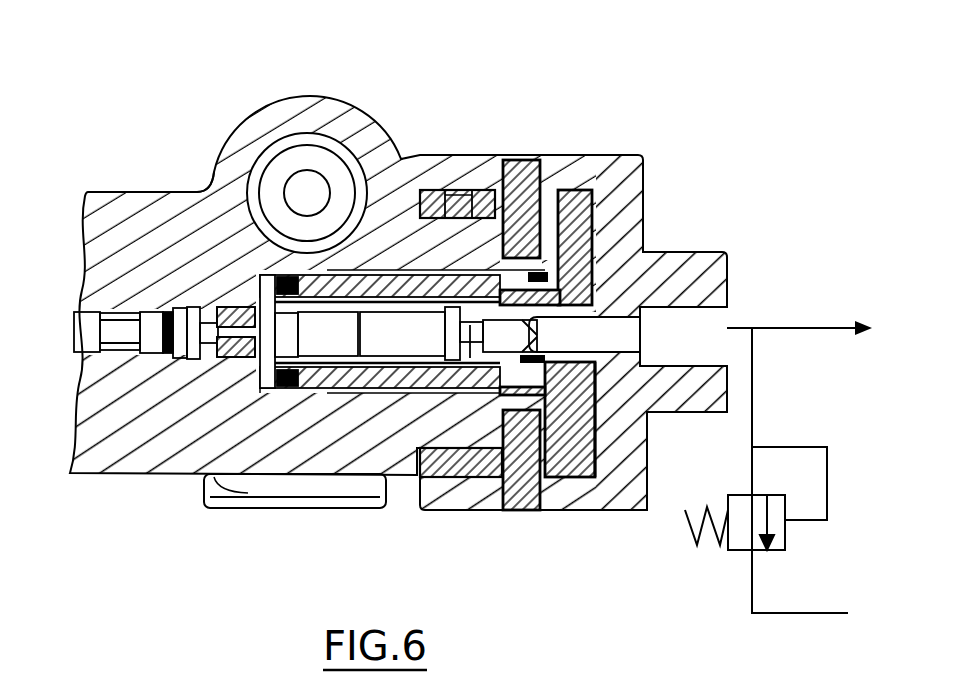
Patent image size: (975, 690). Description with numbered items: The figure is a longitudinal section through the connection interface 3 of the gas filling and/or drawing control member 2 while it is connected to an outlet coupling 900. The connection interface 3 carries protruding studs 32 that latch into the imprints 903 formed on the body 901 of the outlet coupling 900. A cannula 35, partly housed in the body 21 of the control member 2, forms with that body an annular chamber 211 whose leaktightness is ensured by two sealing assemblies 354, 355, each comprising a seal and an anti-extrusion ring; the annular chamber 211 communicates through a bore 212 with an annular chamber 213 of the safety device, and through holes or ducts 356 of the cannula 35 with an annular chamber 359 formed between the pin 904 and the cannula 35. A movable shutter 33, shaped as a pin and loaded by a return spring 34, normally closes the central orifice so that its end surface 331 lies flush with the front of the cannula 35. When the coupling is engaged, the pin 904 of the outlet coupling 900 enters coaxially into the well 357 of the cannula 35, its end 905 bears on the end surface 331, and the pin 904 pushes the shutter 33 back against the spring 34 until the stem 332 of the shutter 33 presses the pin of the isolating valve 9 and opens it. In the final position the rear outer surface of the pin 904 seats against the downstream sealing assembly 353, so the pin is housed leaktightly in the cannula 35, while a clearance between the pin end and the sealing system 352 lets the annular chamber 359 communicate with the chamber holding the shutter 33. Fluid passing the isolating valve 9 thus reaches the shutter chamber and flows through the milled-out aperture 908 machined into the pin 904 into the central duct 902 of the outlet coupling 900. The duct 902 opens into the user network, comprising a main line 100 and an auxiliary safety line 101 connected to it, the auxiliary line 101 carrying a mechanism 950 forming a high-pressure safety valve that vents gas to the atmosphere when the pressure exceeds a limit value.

The gas filling and/or drawing control member 2 is at (163, 486).
The connection interface 3 is at (413, 490).
The isolating valve 9 is at (97, 333).
The body 21 is at (335, 380).
The protruding studs 32 is at (548, 170).
The movable shutter 33 is at (343, 395).
The return spring 34 is at (252, 393).
The cannula 35 is at (585, 410).
The main line 100 is at (790, 328).
The auxiliary safety line 101 is at (752, 400).
The annular chamber 211 is at (400, 275).
The bore 212 is at (363, 278).
The annular chamber 213 is at (305, 142).
The end surface 331 is at (470, 375).
The stem 332 is at (233, 303).
The sealing system 352 is at (506, 162).
The downstream sealing assembly 353 is at (578, 190).
The sealing assembly 354 is at (612, 430).
The sealing assembly 355 is at (250, 258).
The holes or ducts 356 is at (524, 482).
The well 357 is at (598, 210).
The annular chamber 359 is at (600, 319).
The outlet coupling 900 is at (655, 243).
The body 901 is at (645, 215).
The central duct 902 is at (692, 316).
The imprints 903 is at (493, 400).
The pin 904 is at (477, 200).
The end 905 is at (452, 205).
The milled-out aperture 908 is at (492, 478).
The mechanism forming a high-pressure safety valve 950 is at (745, 558).